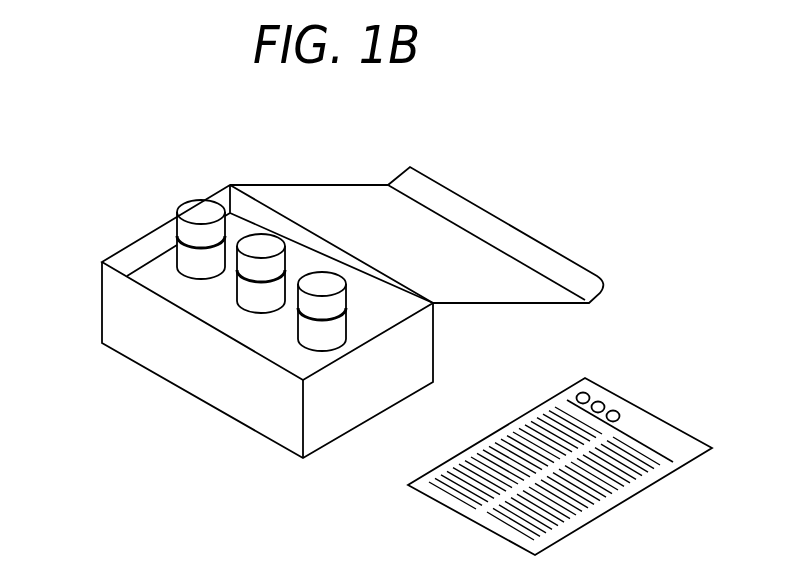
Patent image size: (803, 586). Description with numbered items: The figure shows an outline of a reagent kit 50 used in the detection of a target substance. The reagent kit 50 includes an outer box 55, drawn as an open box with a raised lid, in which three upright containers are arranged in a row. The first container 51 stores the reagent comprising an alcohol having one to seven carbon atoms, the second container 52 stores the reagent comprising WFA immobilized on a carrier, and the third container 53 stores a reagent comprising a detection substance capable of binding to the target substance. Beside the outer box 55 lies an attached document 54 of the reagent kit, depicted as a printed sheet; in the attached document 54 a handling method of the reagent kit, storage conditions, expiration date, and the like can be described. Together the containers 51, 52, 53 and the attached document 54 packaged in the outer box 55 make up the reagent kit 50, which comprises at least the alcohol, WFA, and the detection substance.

The reagent kit 50 is at (385, 319).
The first container 51 is at (180, 263).
The second container 52 is at (238, 291).
The third container 53 is at (299, 333).
The attached document 54 is at (430, 493).
The outer box 55 is at (424, 347).